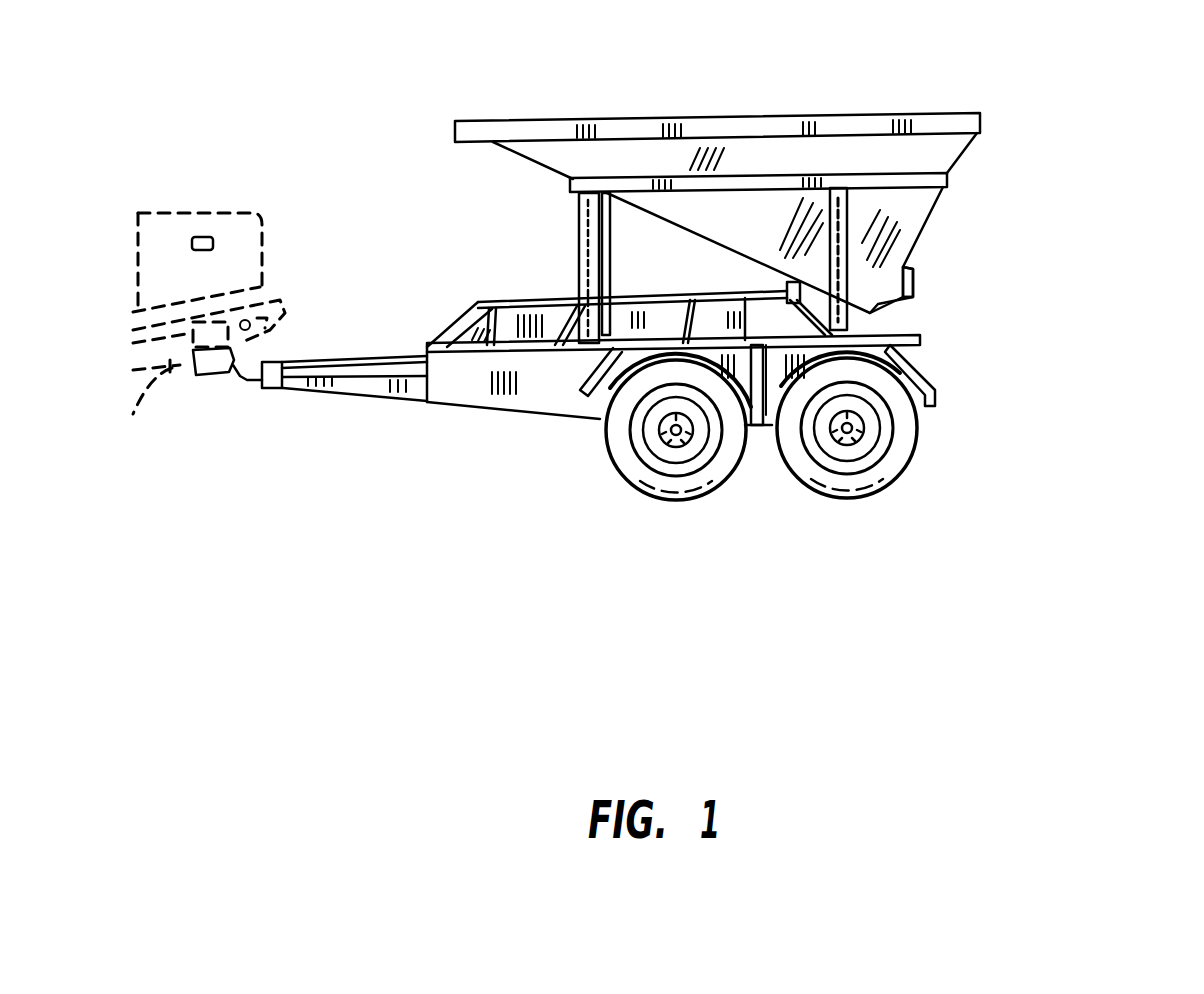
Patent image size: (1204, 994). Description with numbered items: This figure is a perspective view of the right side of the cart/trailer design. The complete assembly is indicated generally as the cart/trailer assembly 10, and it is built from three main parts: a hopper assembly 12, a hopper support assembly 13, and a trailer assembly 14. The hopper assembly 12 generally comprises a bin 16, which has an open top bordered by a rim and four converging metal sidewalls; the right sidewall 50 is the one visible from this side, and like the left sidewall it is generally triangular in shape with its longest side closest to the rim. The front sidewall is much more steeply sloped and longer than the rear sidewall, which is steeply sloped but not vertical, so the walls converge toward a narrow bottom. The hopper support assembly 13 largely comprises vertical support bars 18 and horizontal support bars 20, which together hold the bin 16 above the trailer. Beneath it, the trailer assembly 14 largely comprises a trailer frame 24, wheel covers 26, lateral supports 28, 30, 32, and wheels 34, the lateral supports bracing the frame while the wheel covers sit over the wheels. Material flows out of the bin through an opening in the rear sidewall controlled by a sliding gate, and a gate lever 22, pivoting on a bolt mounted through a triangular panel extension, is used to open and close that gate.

The cart/trailer assembly 10 is at (453, 110).
The hopper assembly 12 is at (1018, 115).
The hopper support assembly 13 is at (1098, 122).
The trailer assembly 14 is at (1023, 305).
The bin 16 is at (757, 150).
The vertical support bars 18 is at (837, 210).
The horizontal support bars 20 is at (838, 178).
The gate lever 22 is at (910, 272).
The trailer frame 24 is at (492, 300).
The wheel covers 26 is at (608, 420).
The lateral support 28 is at (546, 300).
The lateral support 30 is at (756, 432).
The lateral support 32 is at (933, 408).
The wheels 34 is at (668, 487).
The right sidewall 50 is at (637, 133).